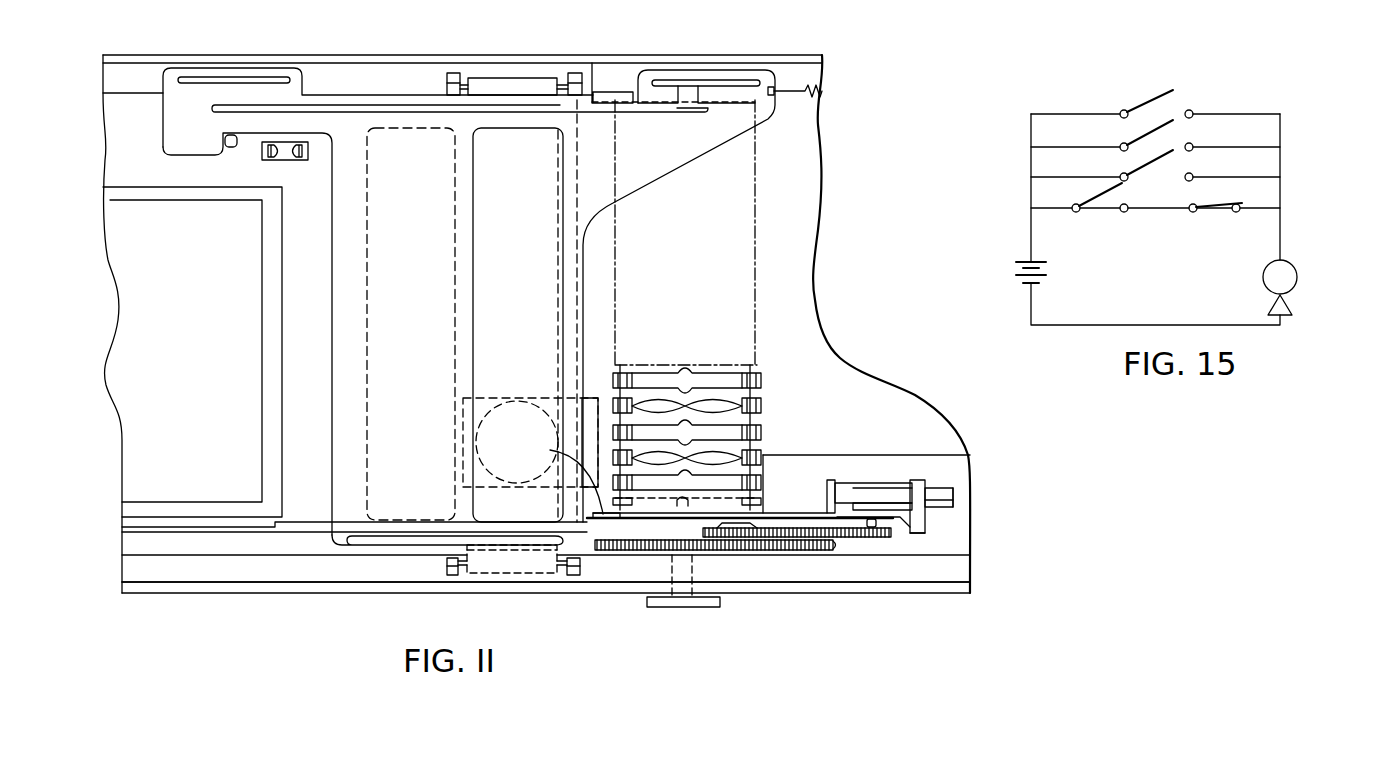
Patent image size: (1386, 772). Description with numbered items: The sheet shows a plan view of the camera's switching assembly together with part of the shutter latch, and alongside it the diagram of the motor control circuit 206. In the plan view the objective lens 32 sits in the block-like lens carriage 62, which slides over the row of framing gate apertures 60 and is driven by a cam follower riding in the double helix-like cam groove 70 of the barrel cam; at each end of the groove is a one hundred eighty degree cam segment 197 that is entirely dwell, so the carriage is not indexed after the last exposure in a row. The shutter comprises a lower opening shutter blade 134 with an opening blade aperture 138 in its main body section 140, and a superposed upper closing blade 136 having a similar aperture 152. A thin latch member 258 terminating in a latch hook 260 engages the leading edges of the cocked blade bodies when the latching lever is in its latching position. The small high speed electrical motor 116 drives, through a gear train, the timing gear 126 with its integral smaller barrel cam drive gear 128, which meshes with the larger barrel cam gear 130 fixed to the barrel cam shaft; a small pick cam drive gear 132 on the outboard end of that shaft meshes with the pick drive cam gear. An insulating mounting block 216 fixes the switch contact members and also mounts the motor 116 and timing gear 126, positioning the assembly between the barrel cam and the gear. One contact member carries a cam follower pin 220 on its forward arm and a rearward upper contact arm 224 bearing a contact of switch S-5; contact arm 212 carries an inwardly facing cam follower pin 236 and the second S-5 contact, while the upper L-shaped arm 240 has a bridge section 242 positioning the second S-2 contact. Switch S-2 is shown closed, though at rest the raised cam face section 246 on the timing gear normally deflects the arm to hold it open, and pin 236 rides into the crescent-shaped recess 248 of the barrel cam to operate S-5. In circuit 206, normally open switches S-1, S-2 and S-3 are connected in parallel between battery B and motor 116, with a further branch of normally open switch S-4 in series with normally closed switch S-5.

In FIG. 11, the objective lens 32 is at (518, 420).
In FIG. 11, the framing gate apertures 60 is at (748, 430).
In FIG. 11, the lens carriage 62 is at (487, 400).
In FIG. 11, the cam groove 70 is at (745, 395).
In FIG. 15, the electrical motor 116 is at (1297, 269).
In FIG. 11, the timing gear 126 is at (855, 538).
In FIG. 11, the barrel cam drive gear 128 is at (836, 551).
In FIG. 11, the barrel cam gear 130 is at (742, 551).
In FIG. 11, the pick cam drive gear 132 is at (687, 607).
In FIG. 11, the opening shutter blade 134 is at (212, 148).
In FIG. 11, the closing blade 136 is at (346, 122).
In FIG. 11, the opening blade aperture 138 is at (403, 150).
In FIG. 11, the main body section 140 is at (528, 215).
In FIG. 11, the aperture 152 is at (515, 143).
In FIG. 11, the cam segment 197 is at (757, 496).
In FIG. 15, the motor control circuit 206 is at (1295, 147).
In FIG. 11, the contact arm 212 is at (777, 513).
In FIG. 11, the mounting block 216 is at (829, 455).
In FIG. 11, the cam follower pin 220 is at (876, 523).
In FIG. 11, the upper contact arm 224 is at (560, 478).
In FIG. 11, the cam follower pin 236 is at (677, 508).
In FIG. 11, the upper L-shaped arm 240 is at (855, 484).
In FIG. 11, the bridge section 242 is at (916, 483).
In FIG. 11, the raised cam face section 246 is at (730, 524).
In FIG. 11, the crescent-shaped recess 248 is at (705, 503).
In FIG. 11, the latch member 258 is at (295, 527).
In FIG. 11, the latch hook 260 is at (590, 516).
In FIG. 15, the battery B is at (1005, 269).
In FIG. 15, the normally open switch S-1 is at (1155, 109).
In FIG. 11, the normally open switch S-2 is at (942, 523).
In FIG. 15, the normally open switch S-2 is at (1158, 143).
In FIG. 11, the normally open switch S-3 is at (975, 484).
In FIG. 15, the normally open switch S-3 is at (1163, 173).
In FIG. 15, the normally open switch S-4 is at (1110, 201).
In FIG. 11, the normally closed switch S-5 is at (624, 523).
In FIG. 15, the normally closed switch S-5 is at (1224, 196).